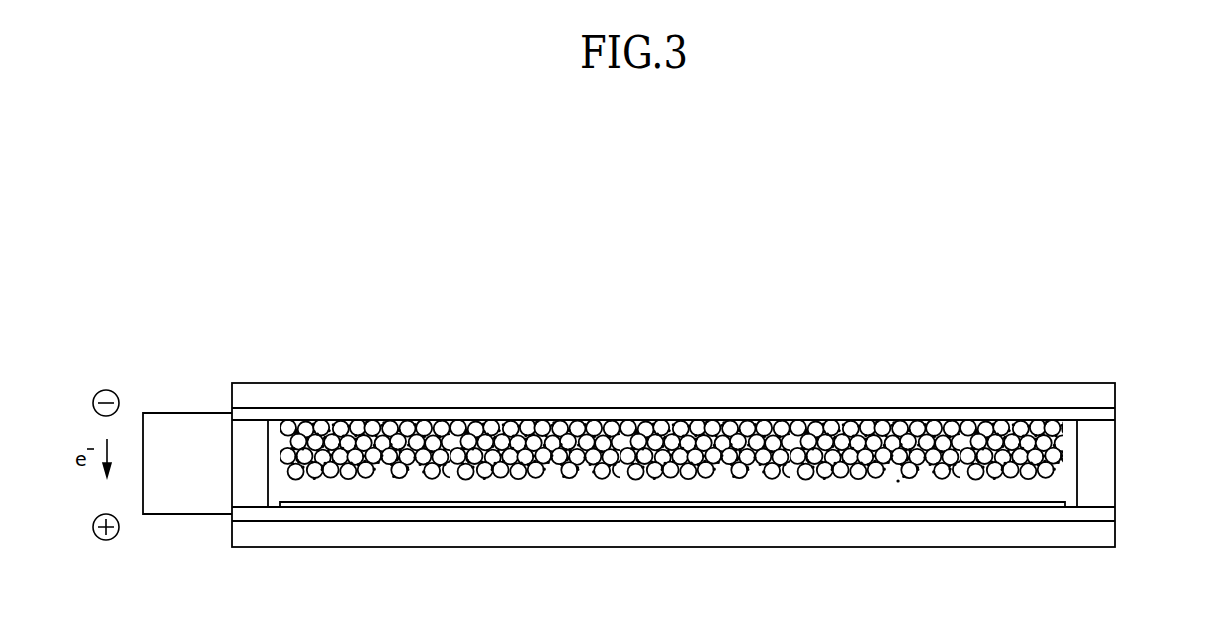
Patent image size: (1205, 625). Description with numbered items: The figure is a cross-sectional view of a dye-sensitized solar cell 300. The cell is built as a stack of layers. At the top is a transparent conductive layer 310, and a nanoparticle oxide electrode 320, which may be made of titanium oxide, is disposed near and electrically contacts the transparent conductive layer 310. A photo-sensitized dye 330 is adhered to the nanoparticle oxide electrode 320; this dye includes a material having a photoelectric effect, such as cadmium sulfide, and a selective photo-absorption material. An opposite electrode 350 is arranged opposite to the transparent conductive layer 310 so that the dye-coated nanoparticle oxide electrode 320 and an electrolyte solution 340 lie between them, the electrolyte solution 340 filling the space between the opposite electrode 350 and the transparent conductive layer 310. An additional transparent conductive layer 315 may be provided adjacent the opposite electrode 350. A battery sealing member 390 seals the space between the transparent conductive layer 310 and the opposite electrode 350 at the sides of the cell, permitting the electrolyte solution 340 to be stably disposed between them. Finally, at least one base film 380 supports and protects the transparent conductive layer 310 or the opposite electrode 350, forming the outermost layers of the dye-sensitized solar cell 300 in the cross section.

The dye-sensitized solar cell 300 is at (483, 347).
The transparent conductive layer 310 is at (683, 415).
The additional transparent conductive layer 315 is at (493, 513).
The nanoparticle oxide electrode 320 is at (887, 427).
The photo-sensitized dye 330 is at (898, 482).
The electrolyte solution 340 is at (652, 490).
The opposite electrode 350 is at (567, 505).
The base film 380 is at (572, 395).
The battery sealing member 390 is at (1095, 447).